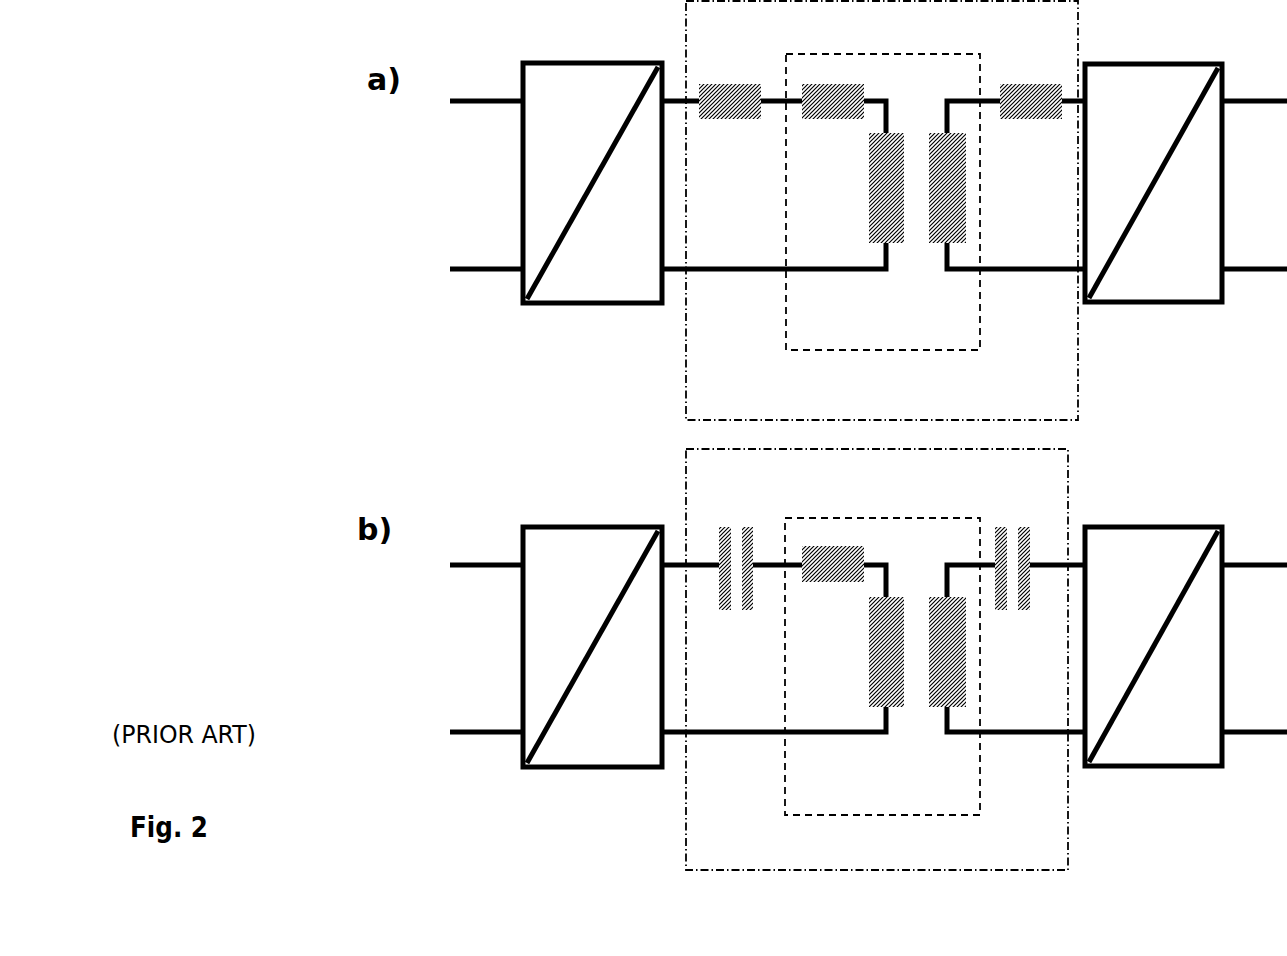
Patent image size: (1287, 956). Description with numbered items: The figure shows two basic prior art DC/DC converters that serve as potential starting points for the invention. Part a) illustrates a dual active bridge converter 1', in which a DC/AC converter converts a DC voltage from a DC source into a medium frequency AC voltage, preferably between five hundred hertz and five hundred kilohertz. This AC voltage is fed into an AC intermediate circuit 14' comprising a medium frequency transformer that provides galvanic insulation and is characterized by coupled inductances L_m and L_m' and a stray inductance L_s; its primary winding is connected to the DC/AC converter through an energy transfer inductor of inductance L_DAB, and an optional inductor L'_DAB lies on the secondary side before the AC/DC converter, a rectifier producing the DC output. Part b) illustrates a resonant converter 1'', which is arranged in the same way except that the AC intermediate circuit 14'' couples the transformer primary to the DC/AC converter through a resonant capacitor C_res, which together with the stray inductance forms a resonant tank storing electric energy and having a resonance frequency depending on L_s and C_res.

The DC/DC dual active bridge converter 1' is at (781, 226).
The resonant DC/DC converter 1'' is at (781, 677).
The AC intermediate circuit 14' is at (882, 210).
The AC intermediate circuit 14'' is at (877, 659).